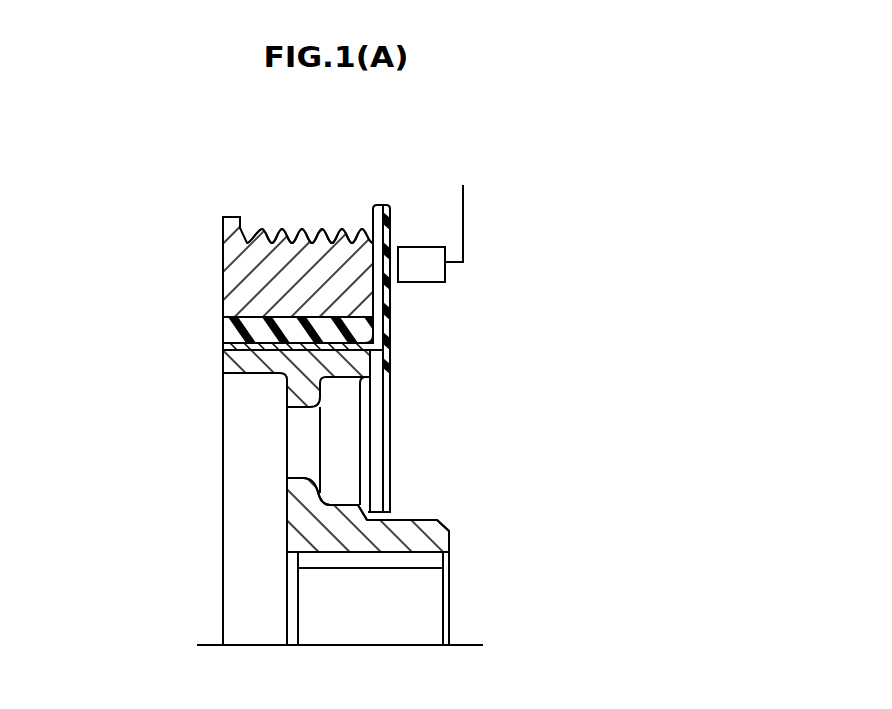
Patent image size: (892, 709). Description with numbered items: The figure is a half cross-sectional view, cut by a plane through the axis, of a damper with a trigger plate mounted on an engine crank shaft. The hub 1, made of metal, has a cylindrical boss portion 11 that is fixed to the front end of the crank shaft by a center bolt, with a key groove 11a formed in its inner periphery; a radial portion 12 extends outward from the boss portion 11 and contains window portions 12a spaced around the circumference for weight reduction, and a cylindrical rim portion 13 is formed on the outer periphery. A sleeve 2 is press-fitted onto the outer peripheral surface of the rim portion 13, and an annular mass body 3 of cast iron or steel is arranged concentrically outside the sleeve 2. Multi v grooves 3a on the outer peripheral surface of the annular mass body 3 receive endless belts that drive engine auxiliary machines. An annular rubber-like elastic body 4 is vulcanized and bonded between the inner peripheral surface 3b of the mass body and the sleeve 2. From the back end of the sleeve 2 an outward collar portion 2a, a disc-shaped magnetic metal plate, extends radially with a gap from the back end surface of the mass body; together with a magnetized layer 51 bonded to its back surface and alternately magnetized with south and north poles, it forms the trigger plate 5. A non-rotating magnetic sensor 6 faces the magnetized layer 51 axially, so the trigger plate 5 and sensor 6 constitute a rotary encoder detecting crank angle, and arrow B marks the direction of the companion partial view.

The hub 1 is at (423, 512).
The cylindrical boss portion 11 is at (430, 538).
The key groove 11a is at (393, 553).
The radial portion 12 is at (292, 495).
The window portions 12a is at (303, 438).
The cylindrical rim portion 13 is at (260, 357).
The sleeve 2 is at (288, 353).
The outward collar portion 2a is at (377, 265).
The annular mass body 3 is at (272, 277).
The multi v grooves 3a is at (312, 237).
The inner peripheral surface 3b is at (253, 300).
The elastic body 4 is at (217, 327).
The trigger plate 5 is at (388, 205).
The magnetized layer 51 is at (390, 308).
The magnetic sensor 6 is at (418, 258).
The arrow B is at (460, 362).